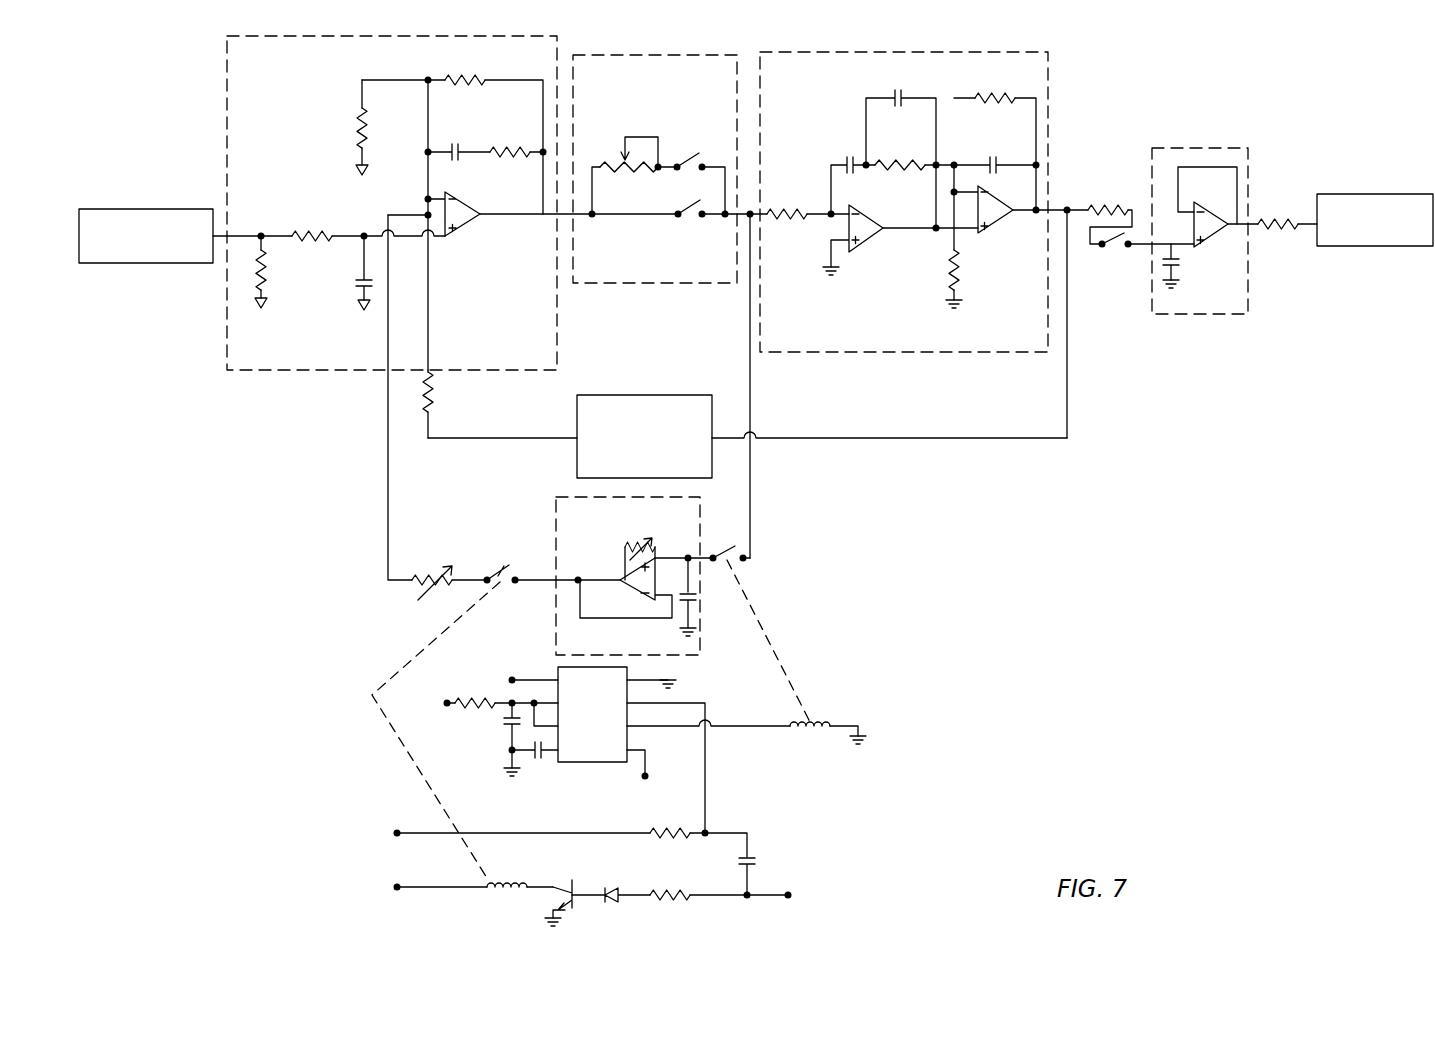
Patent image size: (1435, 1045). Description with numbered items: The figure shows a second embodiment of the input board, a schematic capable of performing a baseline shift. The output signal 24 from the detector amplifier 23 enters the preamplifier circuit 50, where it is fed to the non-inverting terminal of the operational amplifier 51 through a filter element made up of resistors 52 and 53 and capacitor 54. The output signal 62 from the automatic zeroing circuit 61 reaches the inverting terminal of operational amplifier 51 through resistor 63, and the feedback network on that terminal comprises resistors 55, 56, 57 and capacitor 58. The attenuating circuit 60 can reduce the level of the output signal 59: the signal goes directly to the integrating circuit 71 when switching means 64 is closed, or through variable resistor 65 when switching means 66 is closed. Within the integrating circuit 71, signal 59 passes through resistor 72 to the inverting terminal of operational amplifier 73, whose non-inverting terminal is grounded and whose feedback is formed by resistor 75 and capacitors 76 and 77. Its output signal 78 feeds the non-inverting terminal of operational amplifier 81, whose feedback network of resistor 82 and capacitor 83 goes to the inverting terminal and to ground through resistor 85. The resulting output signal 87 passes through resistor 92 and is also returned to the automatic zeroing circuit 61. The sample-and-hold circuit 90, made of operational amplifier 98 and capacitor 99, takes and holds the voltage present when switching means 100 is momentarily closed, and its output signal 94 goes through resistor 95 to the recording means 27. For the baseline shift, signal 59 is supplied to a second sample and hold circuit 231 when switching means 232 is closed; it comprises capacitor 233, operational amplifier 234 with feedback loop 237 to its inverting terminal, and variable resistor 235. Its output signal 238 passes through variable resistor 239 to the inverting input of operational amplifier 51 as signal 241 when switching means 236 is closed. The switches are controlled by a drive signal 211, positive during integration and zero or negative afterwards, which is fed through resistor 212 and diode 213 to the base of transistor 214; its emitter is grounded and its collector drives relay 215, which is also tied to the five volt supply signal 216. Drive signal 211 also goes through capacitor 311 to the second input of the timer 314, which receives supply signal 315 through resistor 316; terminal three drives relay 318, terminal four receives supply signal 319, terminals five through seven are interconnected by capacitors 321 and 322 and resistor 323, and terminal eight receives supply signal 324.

The detector amplifier 23 is at (175, 209).
The output signal 24 is at (260, 232).
The recording means 27 is at (1360, 194).
The preamplifier circuit 50 is at (227, 90).
The operational amplifier 51 is at (460, 236).
The resistor 52 is at (268, 283).
The resistor 53 is at (318, 232).
The capacitor 54 is at (357, 290).
The resistor 55 is at (358, 136).
The resistor 56 is at (465, 76).
The resistor 57 is at (513, 145).
The capacitor 58 is at (455, 145).
The output signal 59 is at (510, 215).
The attenuating circuit 60 is at (668, 55).
The automatic zeroing circuit 61 is at (660, 395).
The output signal 62 is at (472, 440).
The resistor 63 is at (438, 396).
The switching means 64 is at (690, 218).
The variable resistor 65 is at (618, 160).
The switching means 66 is at (695, 158).
The integrating circuit 71 is at (940, 52).
The resistor 72 is at (800, 208).
The operational amplifier 73 is at (865, 248).
The resistor 75 is at (895, 170).
The capacitor 76 is at (888, 95).
The capacitor 77 is at (840, 158).
The output signal 78 is at (912, 232).
The operational amplifier 81 is at (990, 232).
The resistor 82 is at (975, 95).
The capacitor 83 is at (988, 158).
The resistor 85 is at (950, 282).
The output signal 87 is at (1067, 205).
The sample-and-hold circuit 90 is at (1235, 137).
The resistor 92 is at (1108, 205).
The output signal 94 is at (1233, 205).
The resistor 95 is at (1275, 220).
The operational amplifier 98 is at (1210, 248).
The capacitor 99 is at (1180, 270).
The switching means 100 is at (1113, 250).
The drive signal 211 is at (765, 898).
The resistor 212 is at (670, 890).
The diode 213 is at (613, 905).
The transistor 214 is at (568, 880).
The relay 215 is at (508, 892).
The signal 216 is at (435, 885).
The sample and hold circuit 231 is at (556, 501).
The switching means 232 is at (728, 548).
The capacitor 233 is at (700, 610).
The operational amplifier 234 is at (655, 553).
The variable resistor 235 is at (625, 545).
The switching means 236 is at (504, 570).
The feedback loop 237 is at (598, 620).
The output signal 238 is at (545, 578).
The variable resistor 239 is at (432, 590).
The signal 241 is at (388, 500).
The capacitor 311 is at (758, 860).
The timer 314 is at (556, 665).
The signal 315 is at (423, 830).
The resistor 316 is at (648, 831).
The relay 318 is at (810, 730).
The signal 319 is at (650, 755).
The capacitor 321 is at (540, 760).
The capacitor 322 is at (510, 730).
The resistor 323 is at (468, 707).
The signal 324 is at (512, 677).